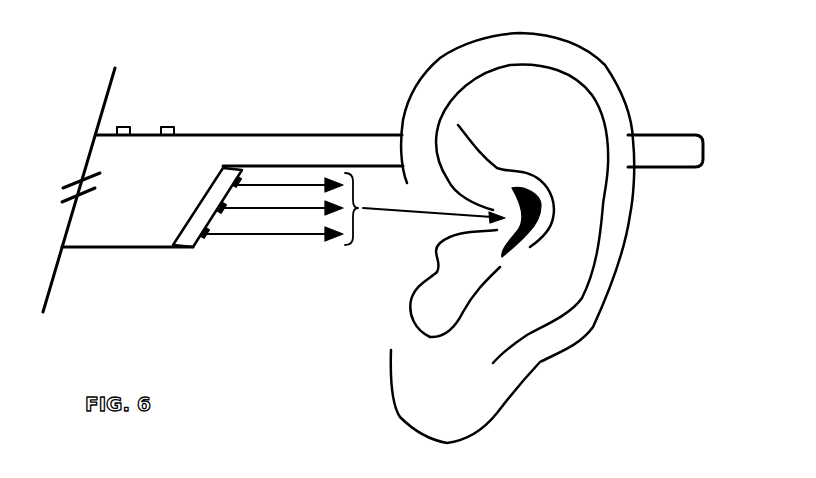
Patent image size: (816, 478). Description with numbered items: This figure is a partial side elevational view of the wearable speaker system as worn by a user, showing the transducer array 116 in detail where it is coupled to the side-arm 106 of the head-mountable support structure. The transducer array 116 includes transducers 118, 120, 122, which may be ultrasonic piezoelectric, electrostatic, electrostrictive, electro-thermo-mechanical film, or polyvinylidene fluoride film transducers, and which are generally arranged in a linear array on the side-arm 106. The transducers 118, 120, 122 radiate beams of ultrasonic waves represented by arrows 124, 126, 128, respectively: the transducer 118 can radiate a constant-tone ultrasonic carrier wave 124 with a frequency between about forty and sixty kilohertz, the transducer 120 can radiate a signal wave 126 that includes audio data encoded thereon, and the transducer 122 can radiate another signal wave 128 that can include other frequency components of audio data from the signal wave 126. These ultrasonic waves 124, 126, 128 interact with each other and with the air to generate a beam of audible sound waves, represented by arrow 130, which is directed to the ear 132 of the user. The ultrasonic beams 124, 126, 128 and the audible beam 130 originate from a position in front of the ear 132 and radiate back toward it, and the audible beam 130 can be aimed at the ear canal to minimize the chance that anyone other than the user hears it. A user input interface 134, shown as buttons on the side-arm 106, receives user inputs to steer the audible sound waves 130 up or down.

The side-arm 106 is at (682, 135).
The transducer array 116 is at (180, 248).
The transducer 118 is at (205, 237).
The transducer 120 is at (218, 213).
The transducer 122 is at (227, 167).
The ultrasonic carrier wave 124 is at (278, 235).
The signal wave 126 is at (317, 210).
The signal wave 128 is at (275, 182).
The beam of audible sound waves 130 is at (387, 212).
The ear 132 is at (590, 327).
The user input interface 134 is at (131, 112).